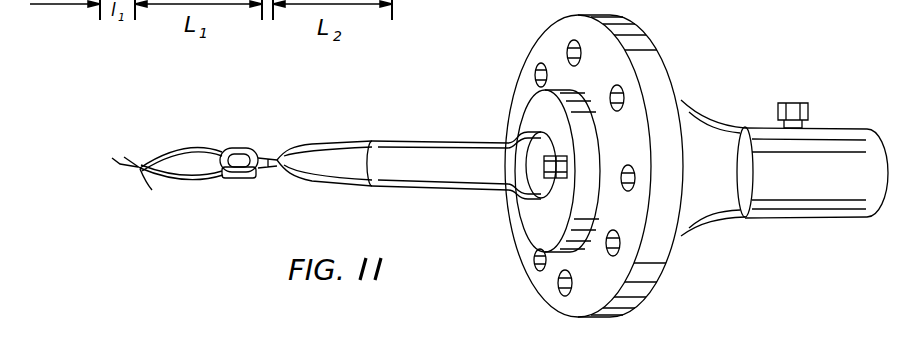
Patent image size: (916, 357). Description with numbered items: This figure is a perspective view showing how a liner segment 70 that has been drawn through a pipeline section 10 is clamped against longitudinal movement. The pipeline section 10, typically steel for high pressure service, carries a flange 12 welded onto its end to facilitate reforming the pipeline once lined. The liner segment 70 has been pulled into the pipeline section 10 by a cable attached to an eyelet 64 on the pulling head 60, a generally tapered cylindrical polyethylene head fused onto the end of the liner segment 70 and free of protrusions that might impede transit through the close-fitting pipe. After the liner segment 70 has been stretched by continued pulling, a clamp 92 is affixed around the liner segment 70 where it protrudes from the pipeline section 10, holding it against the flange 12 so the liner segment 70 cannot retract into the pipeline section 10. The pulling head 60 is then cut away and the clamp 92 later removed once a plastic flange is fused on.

The pipeline section 10 is at (828, 188).
The flange 12 is at (656, 63).
The pulling head 60 is at (329, 177).
The eyelet 64 is at (244, 180).
The liner segment 70 is at (419, 158).
The clamp 92 is at (522, 128).